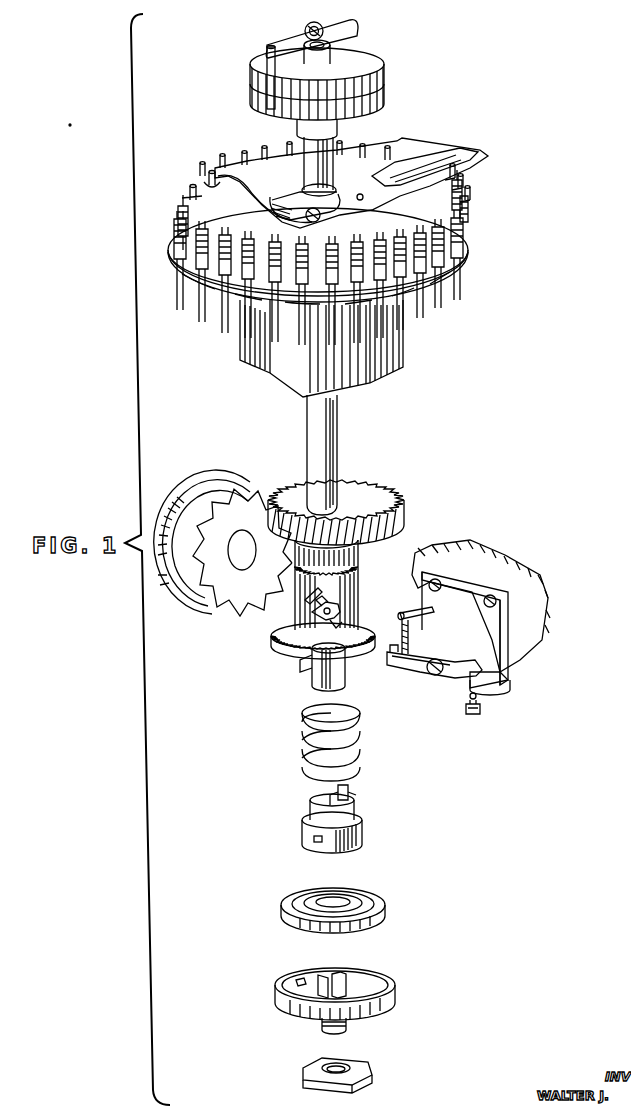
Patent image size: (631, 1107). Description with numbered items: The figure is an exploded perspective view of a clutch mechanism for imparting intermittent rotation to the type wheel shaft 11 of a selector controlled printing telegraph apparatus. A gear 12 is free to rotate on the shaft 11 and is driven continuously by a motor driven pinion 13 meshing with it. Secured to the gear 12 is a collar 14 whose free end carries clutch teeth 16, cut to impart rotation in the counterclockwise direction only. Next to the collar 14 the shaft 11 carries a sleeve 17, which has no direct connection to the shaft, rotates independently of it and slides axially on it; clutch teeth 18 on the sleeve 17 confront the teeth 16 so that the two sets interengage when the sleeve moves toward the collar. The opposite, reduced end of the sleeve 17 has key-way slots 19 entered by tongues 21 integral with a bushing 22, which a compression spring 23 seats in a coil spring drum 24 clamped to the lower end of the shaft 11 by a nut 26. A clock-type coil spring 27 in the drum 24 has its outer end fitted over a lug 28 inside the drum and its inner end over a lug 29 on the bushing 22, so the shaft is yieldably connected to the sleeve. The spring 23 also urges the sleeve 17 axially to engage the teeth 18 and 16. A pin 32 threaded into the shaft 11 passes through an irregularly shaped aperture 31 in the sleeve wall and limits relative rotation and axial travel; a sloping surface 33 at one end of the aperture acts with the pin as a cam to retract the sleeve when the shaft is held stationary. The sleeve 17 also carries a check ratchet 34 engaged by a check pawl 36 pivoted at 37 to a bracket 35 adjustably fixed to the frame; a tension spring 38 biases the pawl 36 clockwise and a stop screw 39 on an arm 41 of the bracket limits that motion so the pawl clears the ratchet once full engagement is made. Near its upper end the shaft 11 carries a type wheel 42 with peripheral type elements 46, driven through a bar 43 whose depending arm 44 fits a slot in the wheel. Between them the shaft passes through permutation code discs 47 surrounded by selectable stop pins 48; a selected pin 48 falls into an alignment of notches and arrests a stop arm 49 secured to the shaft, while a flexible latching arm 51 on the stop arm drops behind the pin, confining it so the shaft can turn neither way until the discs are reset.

The shaft 11 is at (340, 428).
The gear 12 is at (382, 500).
The motor driven pinion 13 is at (203, 488).
The collar 14 is at (358, 547).
The clutch teeth 16 is at (356, 566).
The sleeve 17 is at (413, 610).
The clutch teeth 18 is at (313, 578).
The key-way slots 19 is at (318, 676).
The tongues 21 is at (348, 797).
The bushing 22 is at (365, 823).
The compression spring 23 is at (362, 746).
The coil spring drum 24 is at (396, 992).
The nut 26 is at (366, 1075).
The coil spring 27 is at (392, 903).
The lug 28 is at (296, 981).
The lug 29 is at (314, 840).
The aperture 31 is at (336, 608).
The pin 32 is at (318, 612).
The sloping surface 33 is at (326, 626).
The ratchet 34 is at (362, 641).
The bracket 35 is at (503, 660).
The pawl 36 is at (454, 680).
The pivot 37 is at (434, 674).
The tension spring 38 is at (409, 640).
The stop screw 39 is at (479, 712).
The arm 41 is at (496, 684).
The type wheel 42 is at (344, 117).
The bar 43 is at (352, 31).
The depending arm 44 is at (266, 55).
The type elements 46 is at (384, 104).
The permutation code discs 47 is at (206, 193).
The selectable stop pins 48 is at (212, 170).
The stop arm 49 is at (432, 172).
The flexible latching arm 51 is at (395, 165).